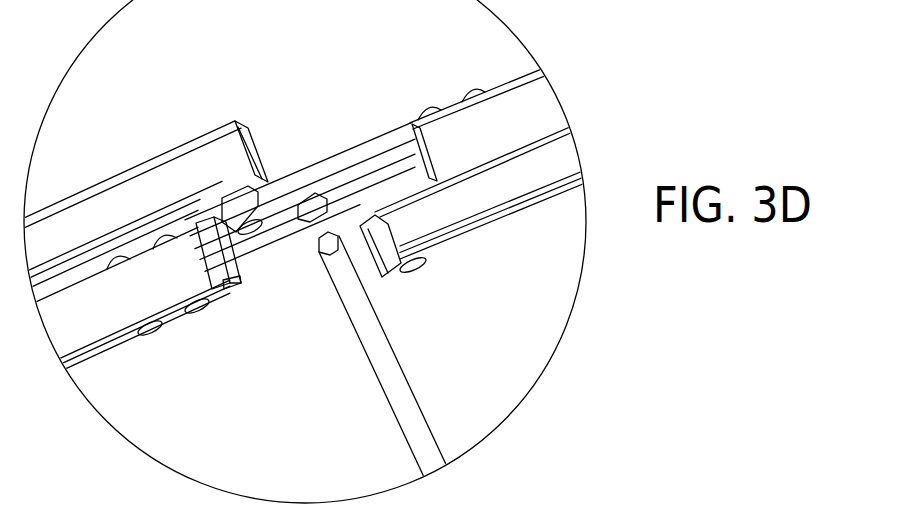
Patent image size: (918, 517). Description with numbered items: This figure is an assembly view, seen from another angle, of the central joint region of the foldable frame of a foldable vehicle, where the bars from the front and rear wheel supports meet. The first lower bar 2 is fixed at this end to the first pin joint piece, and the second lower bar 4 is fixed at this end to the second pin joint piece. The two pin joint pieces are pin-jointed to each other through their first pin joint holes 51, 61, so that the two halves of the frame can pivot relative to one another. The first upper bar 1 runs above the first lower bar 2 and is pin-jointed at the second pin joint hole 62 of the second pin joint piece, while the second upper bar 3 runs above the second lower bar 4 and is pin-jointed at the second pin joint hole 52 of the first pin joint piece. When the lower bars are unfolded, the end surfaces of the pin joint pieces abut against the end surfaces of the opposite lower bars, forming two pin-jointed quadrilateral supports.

The first upper bar 1 is at (134, 198).
The first lower bar 2 is at (120, 317).
The second upper bar 3 is at (498, 90).
The second lower bar 4 is at (480, 201).
The first pin joint hole 51 is at (360, 368).
The second pin joint hole 52 is at (445, 302).
The first pin joint hole 61 is at (300, 147).
The second pin joint hole 62 is at (216, 131).